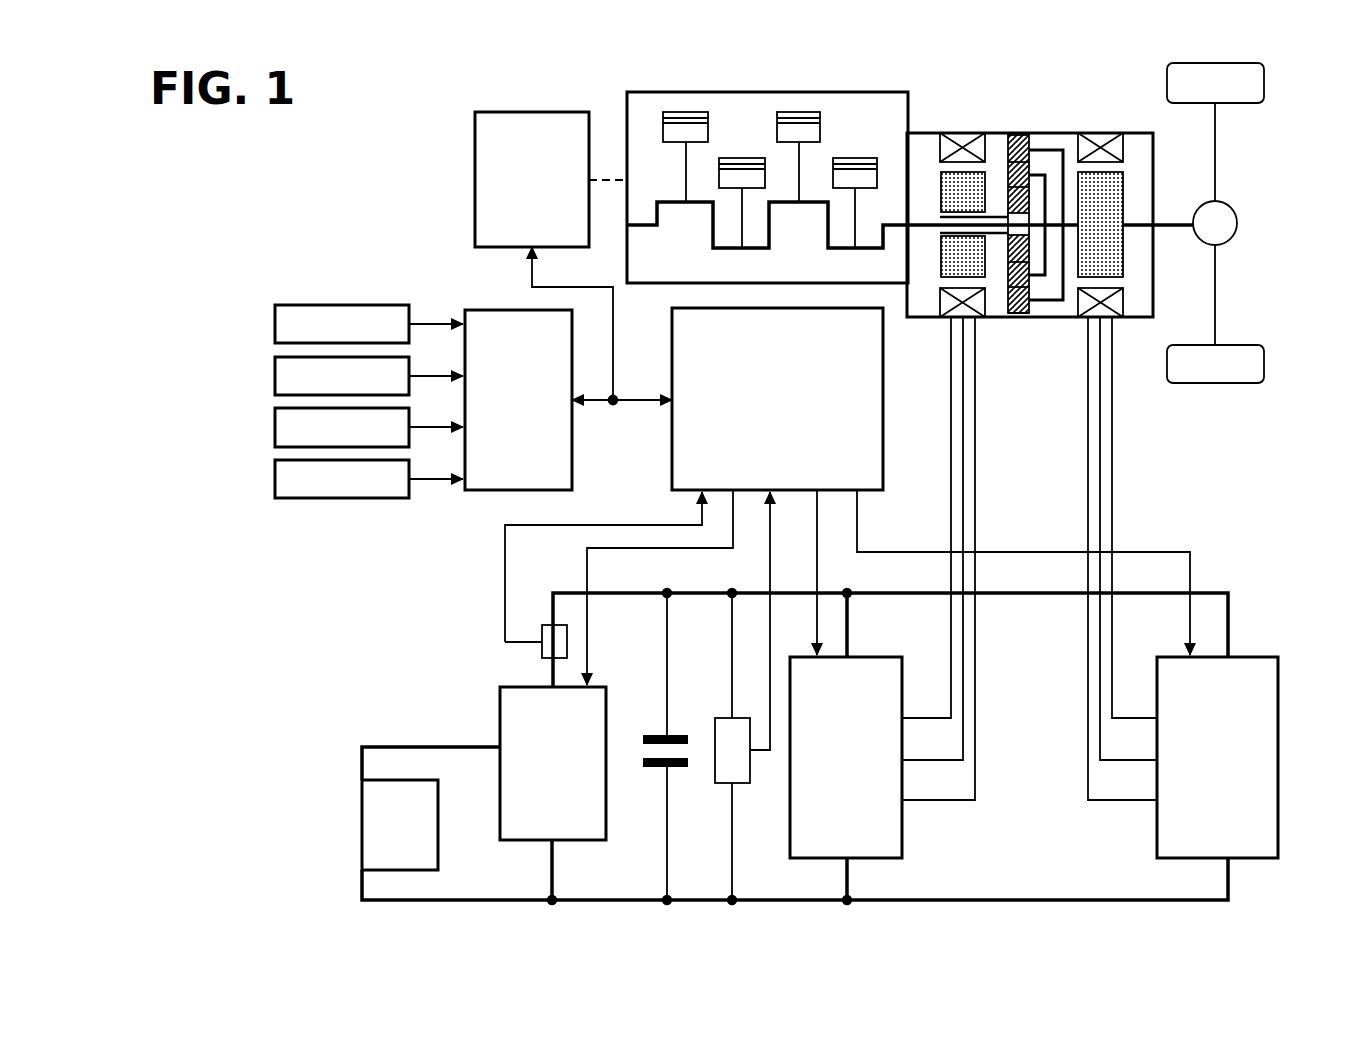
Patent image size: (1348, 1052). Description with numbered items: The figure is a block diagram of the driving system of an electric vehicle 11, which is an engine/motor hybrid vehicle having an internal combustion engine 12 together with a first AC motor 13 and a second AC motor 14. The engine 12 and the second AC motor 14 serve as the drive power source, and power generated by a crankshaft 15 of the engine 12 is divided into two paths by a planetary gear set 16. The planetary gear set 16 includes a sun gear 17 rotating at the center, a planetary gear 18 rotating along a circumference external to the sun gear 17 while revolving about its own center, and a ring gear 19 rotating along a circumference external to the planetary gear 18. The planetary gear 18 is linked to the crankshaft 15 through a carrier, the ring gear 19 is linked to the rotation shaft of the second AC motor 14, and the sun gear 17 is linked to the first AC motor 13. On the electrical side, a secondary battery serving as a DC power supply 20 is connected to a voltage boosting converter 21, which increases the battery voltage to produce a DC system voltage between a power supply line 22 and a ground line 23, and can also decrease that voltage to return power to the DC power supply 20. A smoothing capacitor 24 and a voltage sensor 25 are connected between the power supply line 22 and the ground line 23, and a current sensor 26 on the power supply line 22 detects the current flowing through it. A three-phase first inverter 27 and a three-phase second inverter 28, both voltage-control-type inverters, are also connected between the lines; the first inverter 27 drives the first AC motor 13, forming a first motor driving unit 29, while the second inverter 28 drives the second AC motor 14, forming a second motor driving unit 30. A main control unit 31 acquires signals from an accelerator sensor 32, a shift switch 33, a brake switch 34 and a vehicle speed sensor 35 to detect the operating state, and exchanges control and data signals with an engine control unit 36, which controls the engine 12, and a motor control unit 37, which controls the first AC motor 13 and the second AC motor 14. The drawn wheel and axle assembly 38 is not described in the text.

The electric vehicle 11 is at (834, 70).
The internal combustion engine 12 is at (766, 92).
The first AC motor 13 is at (966, 133).
The second AC motor 14 is at (1100, 133).
The crankshaft 15 is at (921, 222).
The planetary gear set 16 is at (1021, 130).
The sun gear 17 is at (1010, 258).
The planetary gear 18 is at (1012, 290).
The ring gear 19 is at (1017, 316).
The DC power supply 20 is at (362, 823).
The voltage boosting converter 21 is at (500, 707).
The power supply line 22 is at (625, 597).
The ground line 23 is at (630, 897).
The smoothing capacitor 24 is at (681, 770).
The voltage sensor 25 is at (722, 718).
The current sensor 26 is at (546, 625).
The three-phase first inverter 27 is at (877, 657).
The three-phase second inverter 28 is at (1279, 730).
The first motor driving unit 29 is at (926, 812).
The second motor driving unit 30 is at (1129, 812).
The main control unit 31 is at (482, 308).
The accelerator sensor 32 is at (275, 324).
The shift switch 33 is at (275, 376).
The brake switch 34 is at (275, 427).
The vehicle speed sensor 35 is at (275, 479).
The engine control unit 36 is at (533, 112).
The motor control unit 37 is at (883, 410).
The drive wheels 38 is at (1216, 160).